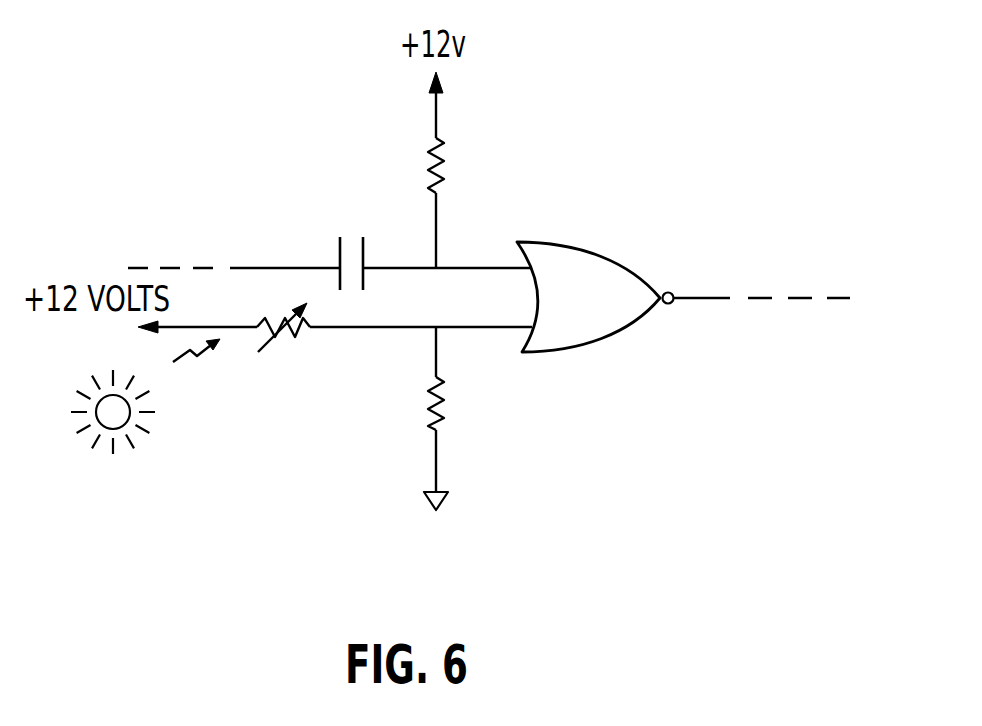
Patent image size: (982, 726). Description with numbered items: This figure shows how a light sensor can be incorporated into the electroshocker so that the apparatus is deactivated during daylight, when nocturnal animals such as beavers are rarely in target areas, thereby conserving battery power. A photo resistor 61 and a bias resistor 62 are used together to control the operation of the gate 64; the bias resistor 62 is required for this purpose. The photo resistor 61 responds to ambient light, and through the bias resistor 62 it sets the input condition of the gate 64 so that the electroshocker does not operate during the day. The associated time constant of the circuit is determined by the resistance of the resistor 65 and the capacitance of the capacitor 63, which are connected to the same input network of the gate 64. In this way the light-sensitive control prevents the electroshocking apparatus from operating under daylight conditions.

The photo resistor 61 is at (298, 335).
The bias resistor 62 is at (444, 408).
The capacitor C1 63 is at (338, 264).
The gate A2 64 is at (633, 262).
The resistor R1 65 is at (502, 172).